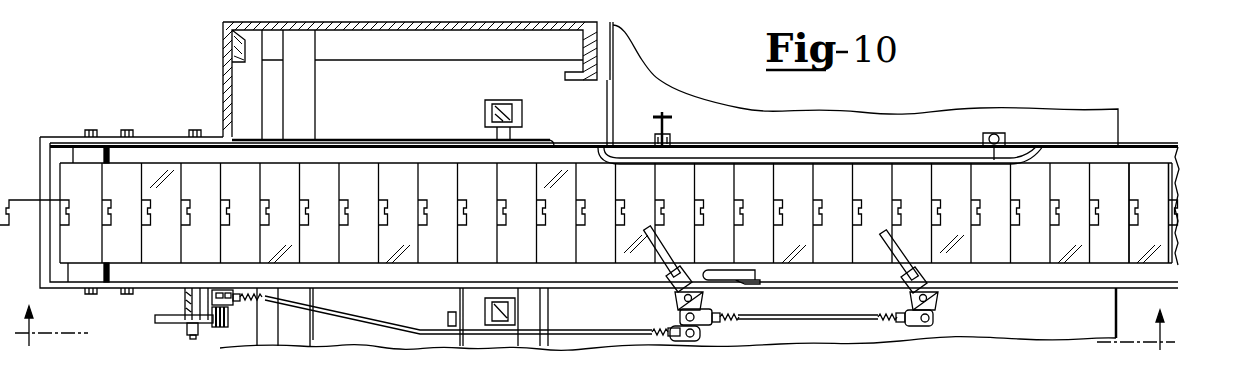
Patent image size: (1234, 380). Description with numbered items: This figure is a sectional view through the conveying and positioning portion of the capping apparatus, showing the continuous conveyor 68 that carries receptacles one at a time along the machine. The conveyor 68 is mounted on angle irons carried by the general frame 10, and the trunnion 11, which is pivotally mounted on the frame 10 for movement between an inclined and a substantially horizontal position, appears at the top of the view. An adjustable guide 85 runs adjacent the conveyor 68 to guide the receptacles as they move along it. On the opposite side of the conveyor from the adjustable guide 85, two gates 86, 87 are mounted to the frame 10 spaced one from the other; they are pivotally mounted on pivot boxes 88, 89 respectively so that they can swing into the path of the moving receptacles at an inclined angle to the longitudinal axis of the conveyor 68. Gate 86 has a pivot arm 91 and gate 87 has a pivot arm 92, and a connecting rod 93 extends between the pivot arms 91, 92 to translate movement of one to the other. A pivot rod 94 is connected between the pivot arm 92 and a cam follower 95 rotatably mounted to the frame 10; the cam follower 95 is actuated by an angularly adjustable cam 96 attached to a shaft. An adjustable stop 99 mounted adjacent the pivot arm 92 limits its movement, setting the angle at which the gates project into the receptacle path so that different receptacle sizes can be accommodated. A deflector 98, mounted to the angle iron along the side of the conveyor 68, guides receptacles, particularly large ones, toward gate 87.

The frame 10 is at (655, 96).
The trunnion 11 is at (595, 340).
The continuous conveyor 68 is at (1145, 196).
The adjustable guide 85 is at (690, 160).
The gate 86 is at (893, 250).
The gate 87 is at (655, 246).
The pivot box 88 is at (935, 300).
The pivot box 89 is at (703, 296).
The pivot arm 91 is at (924, 327).
The pivot arm 92 is at (708, 333).
The connecting rod 93 is at (828, 320).
The pivot rod 94 is at (623, 336).
The cam follower 95 is at (233, 313).
The angularly adjustable cam 96 is at (162, 323).
The deflector 98 is at (735, 270).
The adjustable stop 99 is at (670, 119).